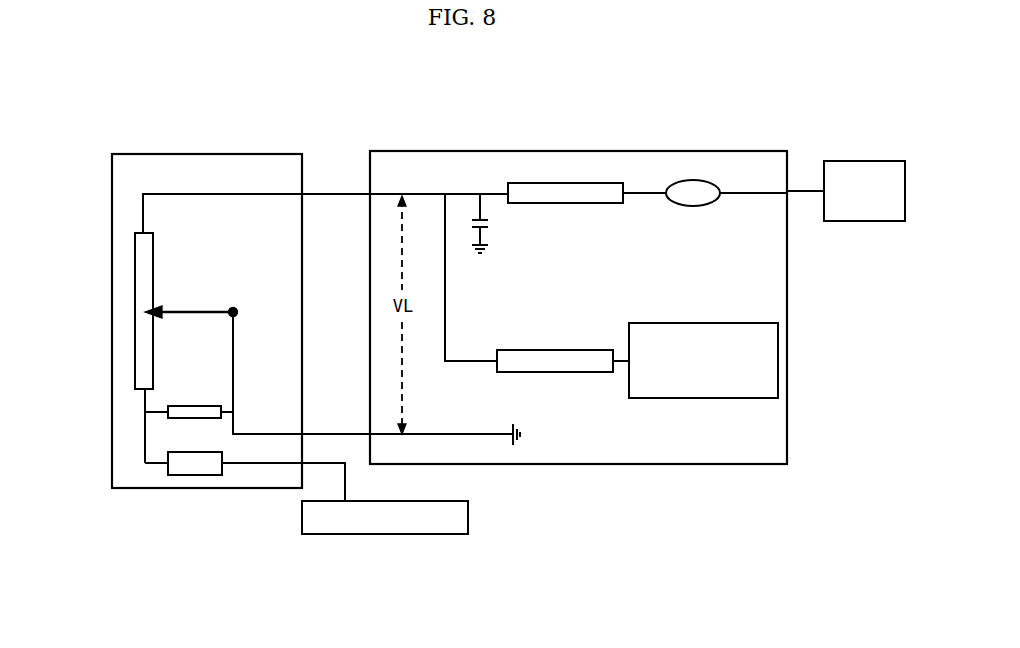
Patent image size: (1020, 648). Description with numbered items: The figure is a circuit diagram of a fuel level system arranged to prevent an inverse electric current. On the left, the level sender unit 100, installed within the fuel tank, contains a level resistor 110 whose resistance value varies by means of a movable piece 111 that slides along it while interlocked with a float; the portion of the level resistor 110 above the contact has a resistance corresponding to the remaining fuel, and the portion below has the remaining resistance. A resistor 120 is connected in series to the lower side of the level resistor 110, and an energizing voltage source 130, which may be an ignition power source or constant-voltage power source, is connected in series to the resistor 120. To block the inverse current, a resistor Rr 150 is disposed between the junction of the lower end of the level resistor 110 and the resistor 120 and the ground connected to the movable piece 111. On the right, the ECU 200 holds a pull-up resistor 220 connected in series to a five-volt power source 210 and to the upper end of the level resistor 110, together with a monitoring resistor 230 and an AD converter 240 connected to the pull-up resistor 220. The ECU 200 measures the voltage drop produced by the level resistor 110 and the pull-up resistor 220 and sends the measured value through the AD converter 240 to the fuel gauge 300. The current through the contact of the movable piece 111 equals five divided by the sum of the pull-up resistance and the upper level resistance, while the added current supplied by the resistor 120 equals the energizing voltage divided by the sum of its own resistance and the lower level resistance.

The level sender unit 100 is at (210, 150).
The level resistor 110 is at (137, 360).
The movable piece 111 is at (207, 317).
The resistor 120 is at (197, 475).
The energizing voltage source 130 is at (447, 534).
The resistor Rr 150 is at (170, 418).
The ECU 200 is at (440, 148).
The power source 210 is at (693, 180).
The pull-up resistor 220 is at (542, 183).
The monitoring resistor 230 is at (555, 372).
The AD converter 240 is at (697, 398).
The fuel gauge 300 is at (862, 160).